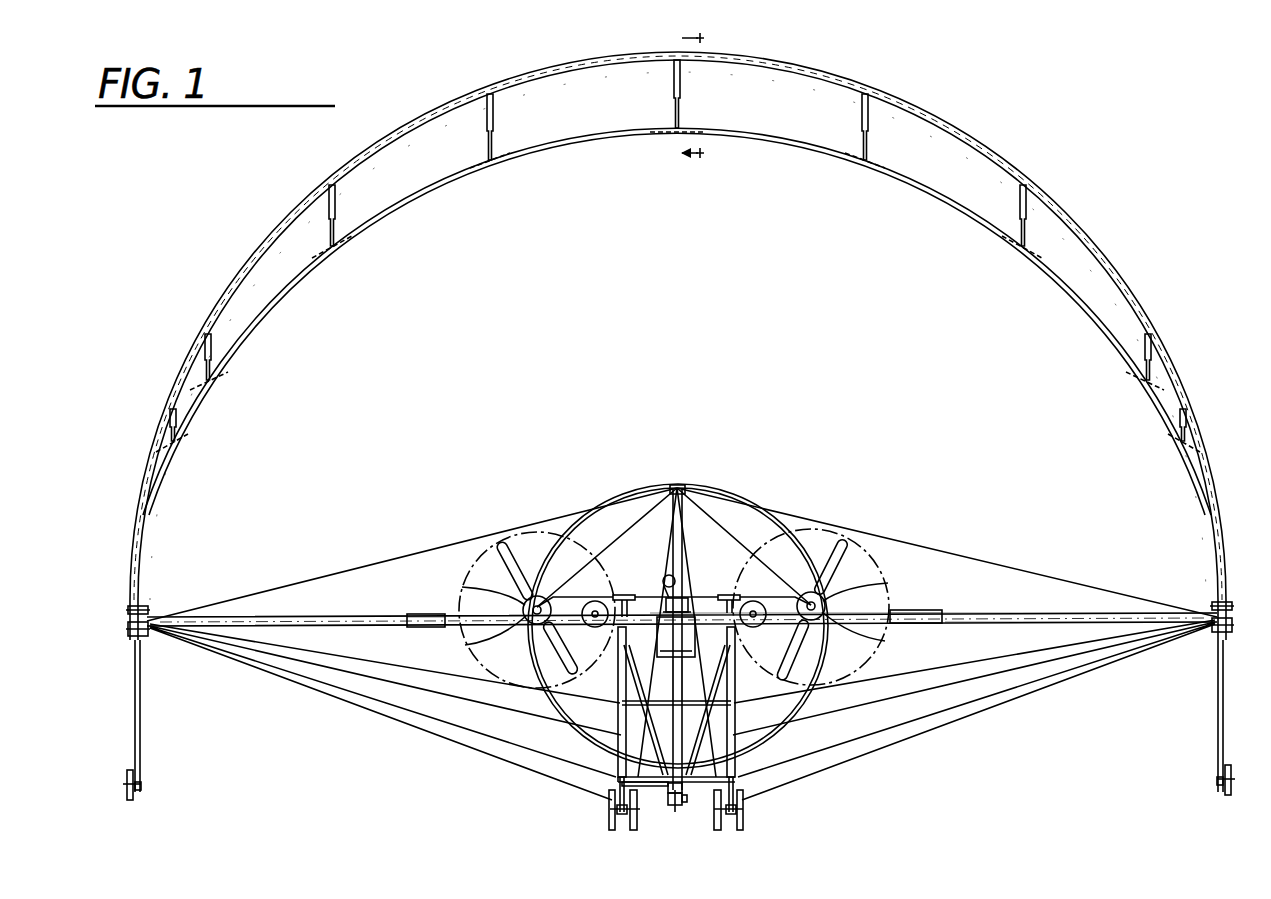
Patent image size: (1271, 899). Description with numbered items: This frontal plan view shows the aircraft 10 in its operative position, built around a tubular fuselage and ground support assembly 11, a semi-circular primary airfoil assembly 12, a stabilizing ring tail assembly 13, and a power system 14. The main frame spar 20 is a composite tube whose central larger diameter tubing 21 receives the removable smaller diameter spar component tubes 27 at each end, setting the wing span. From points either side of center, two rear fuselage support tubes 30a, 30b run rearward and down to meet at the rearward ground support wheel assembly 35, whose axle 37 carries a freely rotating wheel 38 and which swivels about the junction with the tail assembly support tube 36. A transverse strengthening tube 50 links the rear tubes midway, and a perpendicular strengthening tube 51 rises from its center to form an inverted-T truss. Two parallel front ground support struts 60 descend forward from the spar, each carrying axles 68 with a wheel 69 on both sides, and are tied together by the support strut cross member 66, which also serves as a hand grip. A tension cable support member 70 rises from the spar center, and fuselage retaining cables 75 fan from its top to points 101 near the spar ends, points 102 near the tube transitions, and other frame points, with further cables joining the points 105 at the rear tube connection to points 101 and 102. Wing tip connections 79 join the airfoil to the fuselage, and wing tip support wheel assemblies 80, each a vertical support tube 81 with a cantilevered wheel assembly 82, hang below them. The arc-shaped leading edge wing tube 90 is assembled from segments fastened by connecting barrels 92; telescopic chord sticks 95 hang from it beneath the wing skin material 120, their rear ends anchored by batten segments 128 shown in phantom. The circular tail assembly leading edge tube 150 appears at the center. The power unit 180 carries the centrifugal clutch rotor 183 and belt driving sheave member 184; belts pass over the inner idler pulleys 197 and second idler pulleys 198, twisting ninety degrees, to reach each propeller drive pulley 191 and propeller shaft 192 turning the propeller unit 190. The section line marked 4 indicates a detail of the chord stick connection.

The aircraft 10 is at (1014, 68).
The fuselage and ground support assembly 11 is at (760, 799).
The primary airfoil assembly 12 is at (434, 106).
The stabilizing ring tail assembly 13 is at (710, 487).
The power system 14 is at (631, 597).
The section line 4 is at (701, 96).
The main frame spar 20 is at (938, 612).
The larger diameter tubing 21 is at (417, 628).
The smaller diameter main frame spar component tubes 27 is at (347, 624).
The rear fuselage support tube 30a is at (645, 712).
The rear fuselage support tube 30b is at (708, 712).
The rearward ground support wheel assembly 35 is at (670, 793).
The tail assembly support tube 36 is at (658, 702).
The axle 37 is at (684, 806).
The wheel 38 is at (660, 813).
The transverse strengthening tube 50 is at (706, 706).
The strengthening tube 51 is at (682, 700).
The front ground support struts 60 is at (618, 726).
The support strut cross member 66 is at (620, 779).
The axles 68 is at (630, 808).
The wheel 69 is at (606, 822).
The tension cable support member 70 is at (683, 527).
The fuselage retaining cables 75 is at (604, 508).
The wing tip connections 79 is at (150, 608).
The wing tip support wheel assemblies 80 is at (144, 758).
The vertically positioned support tube 81 is at (141, 726).
The cantilevered wheel assembly 82 is at (142, 790).
The leading edge wing tube 90 is at (976, 138).
The connecting barrels 92 is at (494, 84).
The chord sticks 95 is at (494, 125).
The cable attachment points 101 is at (150, 632).
The cable attachment points 102 is at (432, 616).
The cable attachment points 105 is at (731, 703).
The wing skin material 120 is at (776, 137).
The batten segments 128 is at (505, 165).
The tail assembly leading edge tube 150 is at (760, 498).
The power unit 180 is at (676, 637).
The centrifugal clutch rotor 183 is at (687, 604).
The belt driving sheave member 184 is at (676, 580).
The propeller unit 190 is at (500, 540).
The propeller drive pulley 191 is at (522, 607).
The propeller shaft 192 is at (460, 648).
The inner idler pulleys 197 is at (620, 595).
The second idler pulleys 198 is at (595, 627).